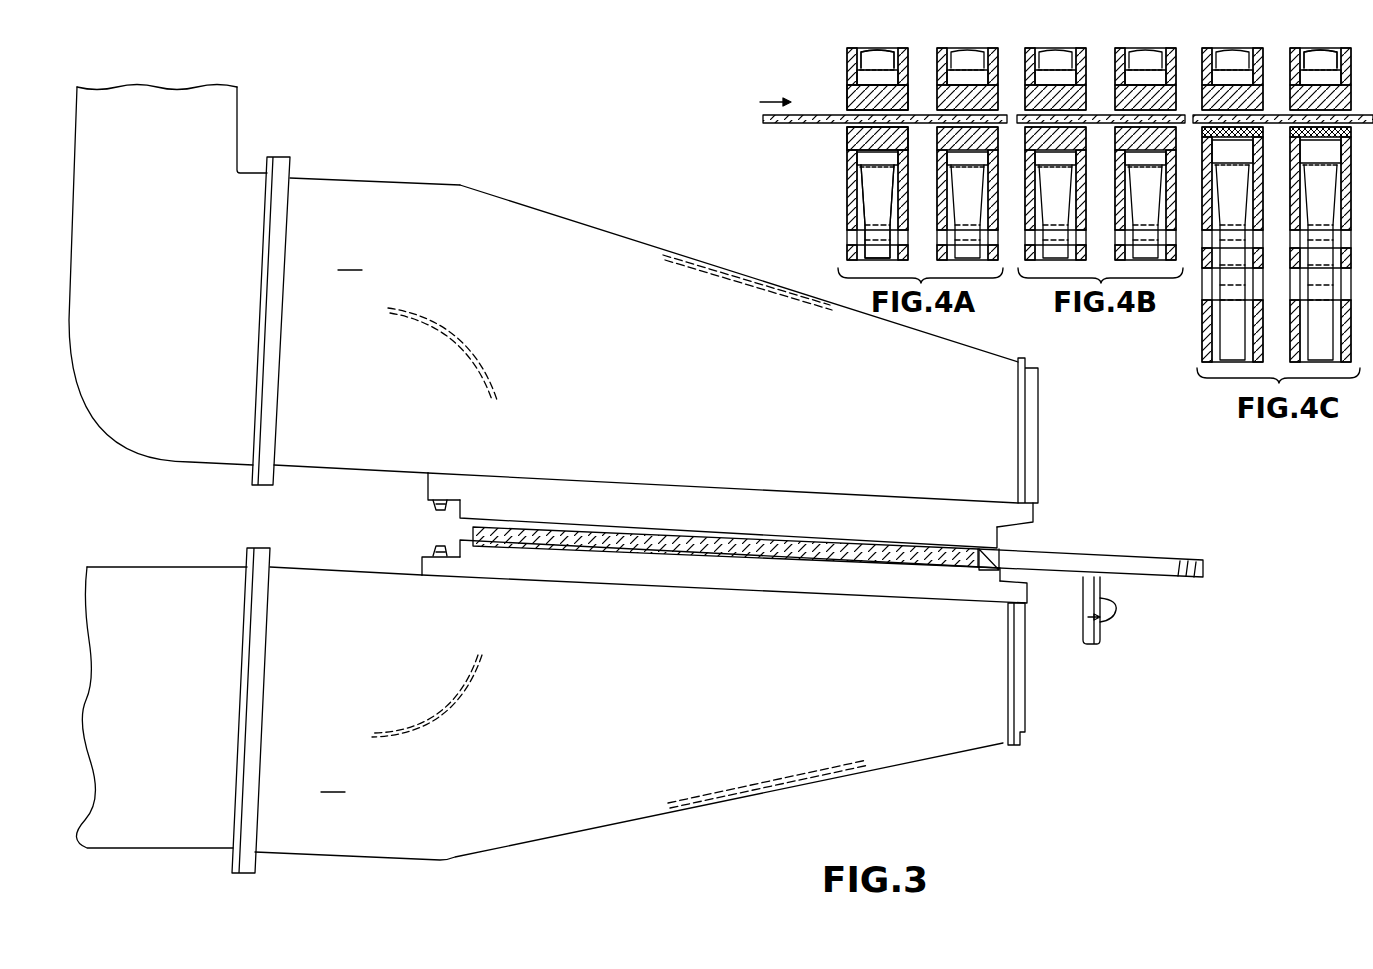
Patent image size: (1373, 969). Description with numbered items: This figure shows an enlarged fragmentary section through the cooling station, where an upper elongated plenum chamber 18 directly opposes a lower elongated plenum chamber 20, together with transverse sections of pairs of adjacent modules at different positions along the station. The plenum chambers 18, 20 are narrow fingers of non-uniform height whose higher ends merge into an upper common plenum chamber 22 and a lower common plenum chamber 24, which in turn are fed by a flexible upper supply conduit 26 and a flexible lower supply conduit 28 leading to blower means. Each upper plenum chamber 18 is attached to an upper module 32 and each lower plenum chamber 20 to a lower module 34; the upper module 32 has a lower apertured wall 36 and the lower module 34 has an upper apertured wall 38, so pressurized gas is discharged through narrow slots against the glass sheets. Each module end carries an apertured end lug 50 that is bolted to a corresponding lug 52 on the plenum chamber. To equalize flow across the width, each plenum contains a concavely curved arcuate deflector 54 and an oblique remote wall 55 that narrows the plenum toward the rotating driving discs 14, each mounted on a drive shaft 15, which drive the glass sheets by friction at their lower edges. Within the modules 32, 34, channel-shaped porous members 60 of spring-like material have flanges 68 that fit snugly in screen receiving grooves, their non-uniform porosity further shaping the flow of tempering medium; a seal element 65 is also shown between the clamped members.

In FIG. 3, the rotating driving disc 14 is at (1165, 567).
In FIG. 3, the drive shaft 15 is at (1100, 630).
In FIG. 3, the upper elongated plenum chamber 18 is at (537, 212).
In FIG. 3, the lower elongated plenum chamber 20 is at (540, 840).
In FIG. 3, the upper common plenum chamber 22 is at (543, 272).
In FIG. 3, the lower common plenum chamber 24 is at (539, 695).
In FIG. 3, the flexible upper supply conduit 26 is at (162, 98).
In FIG. 3, the flexible lower supply conduit 28 is at (167, 578).
In FIG. 3, the upper module 32 is at (457, 517).
In FIG. 4A, the upper module 32 is at (847, 52).
In FIG. 3, the lower module 34 is at (457, 541).
In FIG. 4A, the lower module 34 is at (847, 243).
In FIG. 4A, the lower apertured wall 36 is at (847, 95).
In FIG. 4A, the upper apertured wall 38 is at (847, 135).
In FIG. 3, the apertured end lug 50 is at (428, 487).
In FIG. 3, the lug 52 is at (1030, 485).
In FIG. 3, the arcuate deflector 54 is at (465, 335).
In FIG. 3, the oblique remote wall 55 is at (757, 285).
In FIG. 4A, the porous member 60 is at (881, 58).
In FIG. 4C, the porous member 60 is at (1320, 56).
In FIG. 3, the seal 65 is at (1003, 562).
In FIG. 4A, the flange 68 is at (877, 211).